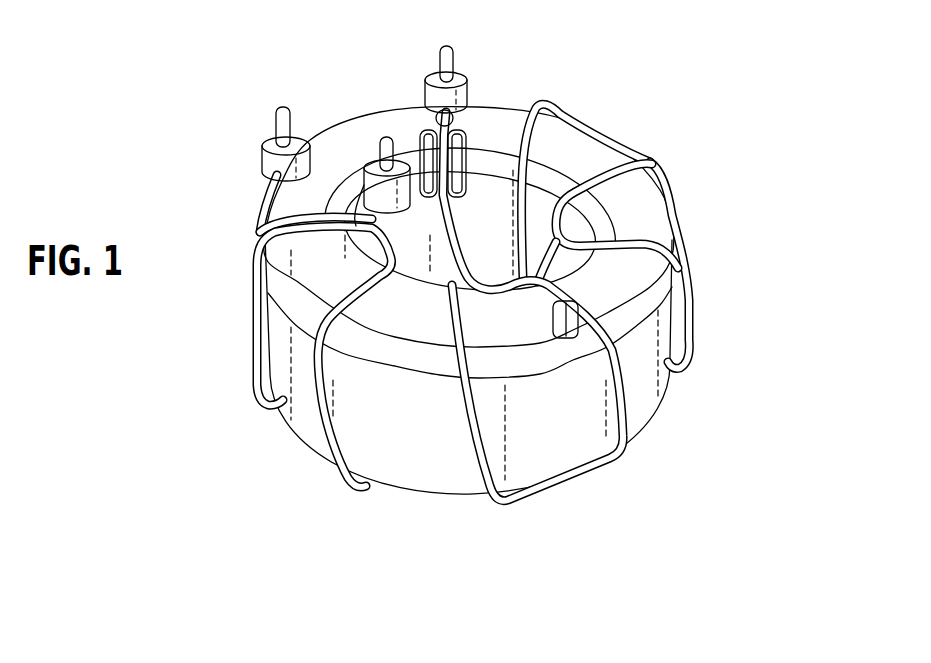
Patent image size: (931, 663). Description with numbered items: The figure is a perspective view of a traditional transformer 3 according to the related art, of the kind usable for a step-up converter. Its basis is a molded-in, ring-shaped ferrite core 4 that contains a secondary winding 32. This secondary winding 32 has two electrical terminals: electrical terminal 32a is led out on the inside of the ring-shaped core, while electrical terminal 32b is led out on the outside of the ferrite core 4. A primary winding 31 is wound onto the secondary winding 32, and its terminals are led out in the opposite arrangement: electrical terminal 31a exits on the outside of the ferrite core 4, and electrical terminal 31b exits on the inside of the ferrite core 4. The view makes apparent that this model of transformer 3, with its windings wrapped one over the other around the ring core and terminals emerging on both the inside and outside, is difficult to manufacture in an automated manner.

The transformer 3 is at (714, 83).
The ferrite core 4 is at (415, 445).
The primary winding 31 is at (617, 387).
The electrical terminal 31a is at (262, 134).
The electrical terminal 31b is at (466, 124).
The secondary winding 32 is at (633, 210).
The electrical terminal 32a is at (379, 146).
The electrical terminal 32b is at (439, 60).